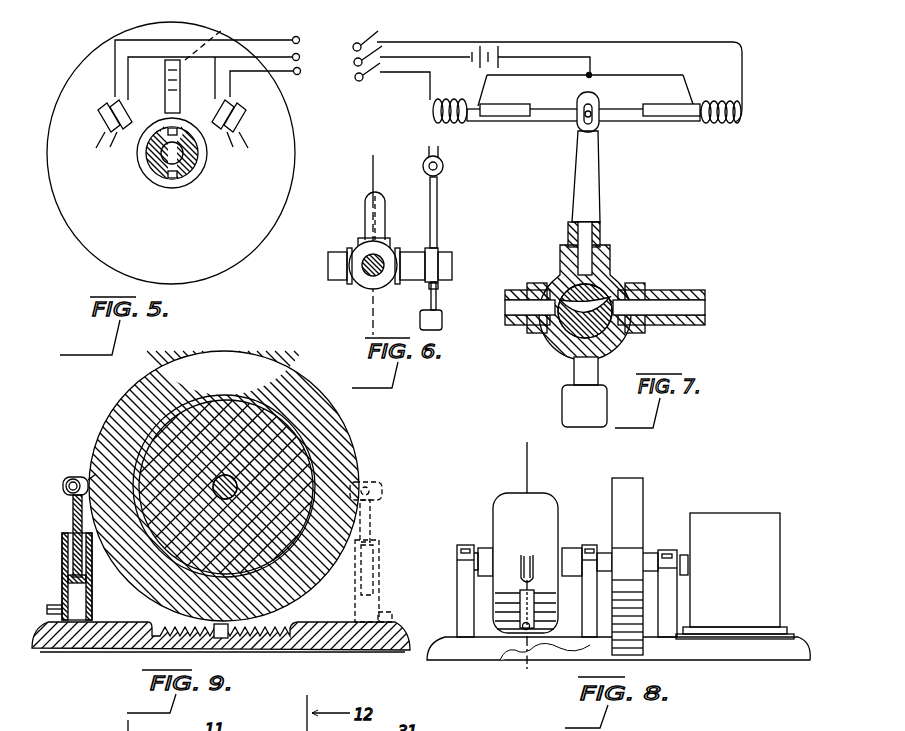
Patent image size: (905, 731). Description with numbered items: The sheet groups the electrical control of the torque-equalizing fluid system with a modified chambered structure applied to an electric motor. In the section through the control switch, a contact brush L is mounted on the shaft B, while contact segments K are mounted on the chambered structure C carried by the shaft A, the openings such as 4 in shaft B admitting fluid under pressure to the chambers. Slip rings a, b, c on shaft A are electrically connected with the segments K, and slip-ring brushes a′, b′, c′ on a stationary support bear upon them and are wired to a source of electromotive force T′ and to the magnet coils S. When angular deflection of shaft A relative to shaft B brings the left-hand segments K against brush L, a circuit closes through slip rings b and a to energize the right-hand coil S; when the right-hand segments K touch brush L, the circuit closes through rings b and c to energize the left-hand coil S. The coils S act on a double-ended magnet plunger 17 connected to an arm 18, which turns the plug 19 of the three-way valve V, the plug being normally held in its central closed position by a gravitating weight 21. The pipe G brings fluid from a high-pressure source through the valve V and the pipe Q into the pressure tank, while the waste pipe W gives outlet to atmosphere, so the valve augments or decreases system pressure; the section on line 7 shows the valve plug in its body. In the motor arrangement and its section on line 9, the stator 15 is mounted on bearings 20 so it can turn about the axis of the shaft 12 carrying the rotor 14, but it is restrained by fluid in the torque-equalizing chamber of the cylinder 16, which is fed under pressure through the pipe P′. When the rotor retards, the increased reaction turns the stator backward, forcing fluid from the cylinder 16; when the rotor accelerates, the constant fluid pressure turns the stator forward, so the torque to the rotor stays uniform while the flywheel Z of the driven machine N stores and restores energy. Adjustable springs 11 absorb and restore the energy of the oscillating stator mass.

In FIG. 5, the contact brush L is at (214, 37).
In FIG. 5, the slip ring a is at (214, 63).
In FIG. 7, the slip ring a is at (346, 46).
In FIG. 5, the slip ring b is at (221, 73).
In FIG. 7, the slip ring b is at (347, 61).
In FIG. 5, the slip ring c is at (271, 79).
In FIG. 7, the slip ring c is at (347, 77).
In FIG. 7, the slip-ring brush a′ is at (379, 29).
In FIG. 7, the slip-ring brush b′ is at (389, 41).
In FIG. 7, the slip-ring brush c′ is at (384, 63).
In FIG. 5, the contact segments K is at (163, 133).
In FIG. 5, the chambered structure C is at (258, 178).
In FIG. 5, the shaft B is at (150, 160).
In FIG. 5, the shaft A is at (180, 160).
In FIG. 5, the opening in shaft B 4 is at (168, 170).
In FIG. 6, the section line 7— 7 is at (370, 164).
In FIG. 8, the section line 9— 9 is at (532, 447).
In FIG. 6, the pipe Q is at (381, 216).
In FIG. 7, the pipe Q is at (600, 238).
In FIG. 6, the three-way valve V is at (365, 283).
In FIG. 7, the three-way valve V is at (618, 336).
In FIG. 6, the waste pipe W is at (385, 282).
In FIG. 7, the waste pipe W is at (512, 323).
In FIG. 7, the pipe G is at (692, 326).
In FIG. 6, the double-ended magnet plunger 17 is at (444, 166).
In FIG. 7, the double-ended magnet plunger 17 is at (612, 124).
In FIG. 6, the magnet coils S is at (440, 177).
In FIG. 7, the magnet coils S is at (470, 118).
In FIG. 6, the arm 18 is at (438, 226).
In FIG. 7, the arm 18 is at (592, 179).
In FIG. 6, the valve plug 19 is at (440, 264).
In FIG. 7, the valve plug 19 is at (618, 279).
In FIG. 6, the gravitating weight 21 is at (444, 316).
In FIG. 7, the gravitating weight 21 is at (596, 419).
In FIG. 7, the source of electromotive force T′ is at (505, 50).
In FIG. 9, the rotor 14 is at (227, 418).
In FIG. 9, the shaft 12 is at (240, 481).
In FIG. 8, the shaft 12 is at (656, 565).
In FIG. 9, the stator 15 is at (340, 471).
In FIG. 8, the stator 15 is at (551, 532).
In FIG. 9, the cylinder 16 is at (62, 575).
In FIG. 8, the cylinder 16 is at (521, 600).
In FIG. 9, the pipe P′ is at (48, 607).
In FIG. 8, the pipe P′ is at (525, 632).
In FIG. 9, the adjustable springs 11 is at (278, 628).
In FIG. 8, the bearings 20 is at (462, 592).
In FIG. 8, the flywheel Z is at (632, 491).
In FIG. 8, the driven machine N is at (735, 576).